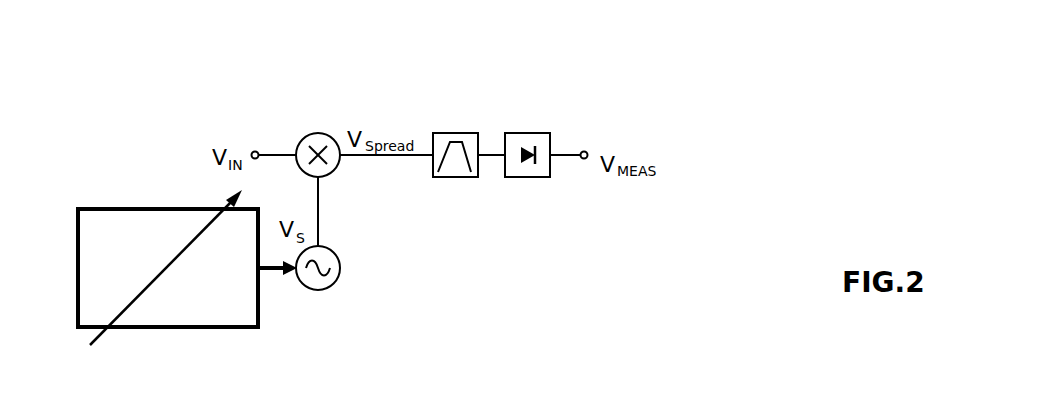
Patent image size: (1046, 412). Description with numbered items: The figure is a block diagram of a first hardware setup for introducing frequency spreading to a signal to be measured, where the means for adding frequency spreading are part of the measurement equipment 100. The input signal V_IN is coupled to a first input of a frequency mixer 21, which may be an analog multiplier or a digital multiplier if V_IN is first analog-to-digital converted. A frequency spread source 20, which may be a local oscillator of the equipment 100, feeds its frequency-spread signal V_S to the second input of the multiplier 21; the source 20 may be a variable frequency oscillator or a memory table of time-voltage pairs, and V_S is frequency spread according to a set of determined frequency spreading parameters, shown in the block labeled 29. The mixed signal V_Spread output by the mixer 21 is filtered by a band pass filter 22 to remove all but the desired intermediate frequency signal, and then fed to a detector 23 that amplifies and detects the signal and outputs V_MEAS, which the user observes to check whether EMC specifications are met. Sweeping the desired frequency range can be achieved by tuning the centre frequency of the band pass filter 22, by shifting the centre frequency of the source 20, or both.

The frequency spread source 20 is at (348, 268).
The frequency mixer 21 is at (323, 127).
The band pass filter 22 is at (577, 100).
The detector 23 is at (613, 128).
The frequency spreading parameters block 29 is at (78, 267).
The measurement equipment 100 is at (637, 257).